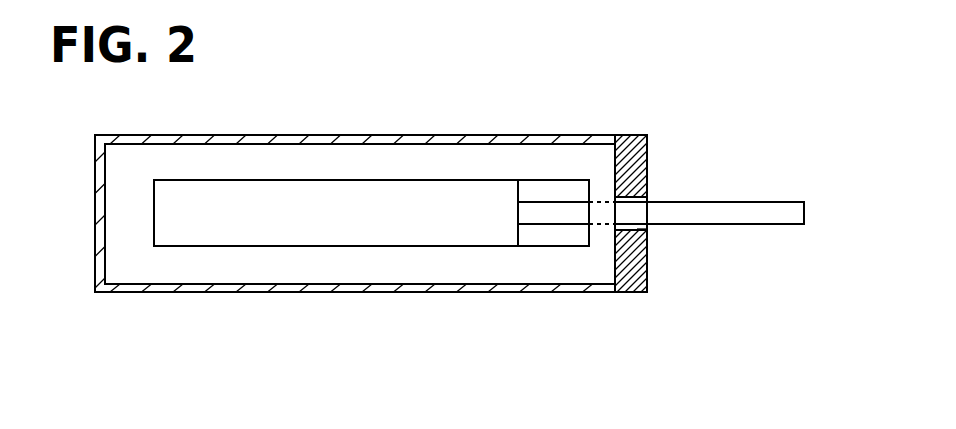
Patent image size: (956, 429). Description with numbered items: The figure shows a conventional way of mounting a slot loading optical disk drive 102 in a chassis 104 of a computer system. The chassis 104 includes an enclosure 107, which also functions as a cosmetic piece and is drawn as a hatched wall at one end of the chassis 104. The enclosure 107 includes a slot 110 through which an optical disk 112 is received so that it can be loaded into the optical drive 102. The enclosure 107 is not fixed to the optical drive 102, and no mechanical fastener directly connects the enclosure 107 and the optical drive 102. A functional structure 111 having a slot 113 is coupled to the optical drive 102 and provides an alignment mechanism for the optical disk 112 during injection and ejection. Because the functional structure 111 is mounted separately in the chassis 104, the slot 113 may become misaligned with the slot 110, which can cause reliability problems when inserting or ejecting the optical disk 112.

The slot loading optical disk drive 102 is at (344, 217).
The chassis 104 is at (522, 275).
The enclosure 107 is at (647, 158).
The slot 110 is at (647, 228).
The functional structure 111 is at (551, 178).
The optical disk 112 is at (792, 200).
The slot 113 is at (576, 200).